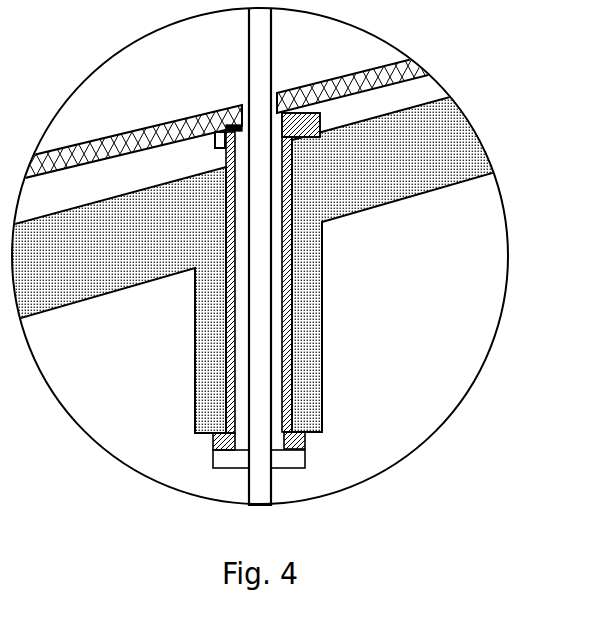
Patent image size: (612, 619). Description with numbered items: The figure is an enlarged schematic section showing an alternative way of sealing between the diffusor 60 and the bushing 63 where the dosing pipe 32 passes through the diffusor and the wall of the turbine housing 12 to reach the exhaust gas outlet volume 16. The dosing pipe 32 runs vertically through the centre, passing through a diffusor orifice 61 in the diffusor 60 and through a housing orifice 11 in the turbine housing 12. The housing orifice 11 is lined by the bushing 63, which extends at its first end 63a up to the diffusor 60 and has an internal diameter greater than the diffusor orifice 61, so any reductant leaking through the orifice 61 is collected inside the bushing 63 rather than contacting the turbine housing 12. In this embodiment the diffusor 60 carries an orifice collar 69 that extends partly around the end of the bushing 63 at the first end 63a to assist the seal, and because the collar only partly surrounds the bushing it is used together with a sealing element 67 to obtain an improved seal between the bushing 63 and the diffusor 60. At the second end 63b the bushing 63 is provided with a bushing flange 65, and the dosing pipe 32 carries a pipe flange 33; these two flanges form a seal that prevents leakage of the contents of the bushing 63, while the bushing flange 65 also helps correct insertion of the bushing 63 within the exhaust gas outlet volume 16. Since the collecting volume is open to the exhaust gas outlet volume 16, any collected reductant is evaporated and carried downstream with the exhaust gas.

The housing orifice 11 is at (277, 372).
The turbine housing 12 is at (408, 166).
The exhaust gas outlet volume 16 is at (302, 43).
The dosing pipe 32 is at (270, 266).
The pipe flange 33 is at (295, 462).
The diffusor 60 is at (366, 82).
The diffusor orifice 61 is at (246, 104).
The bushing 63 is at (233, 338).
The first end of the bushing 63a is at (229, 107).
The second end of the bushing 63b is at (305, 441).
The bushing flange 65 is at (213, 443).
The sealing element 67 is at (322, 124).
The orifice collar 69 is at (215, 143).